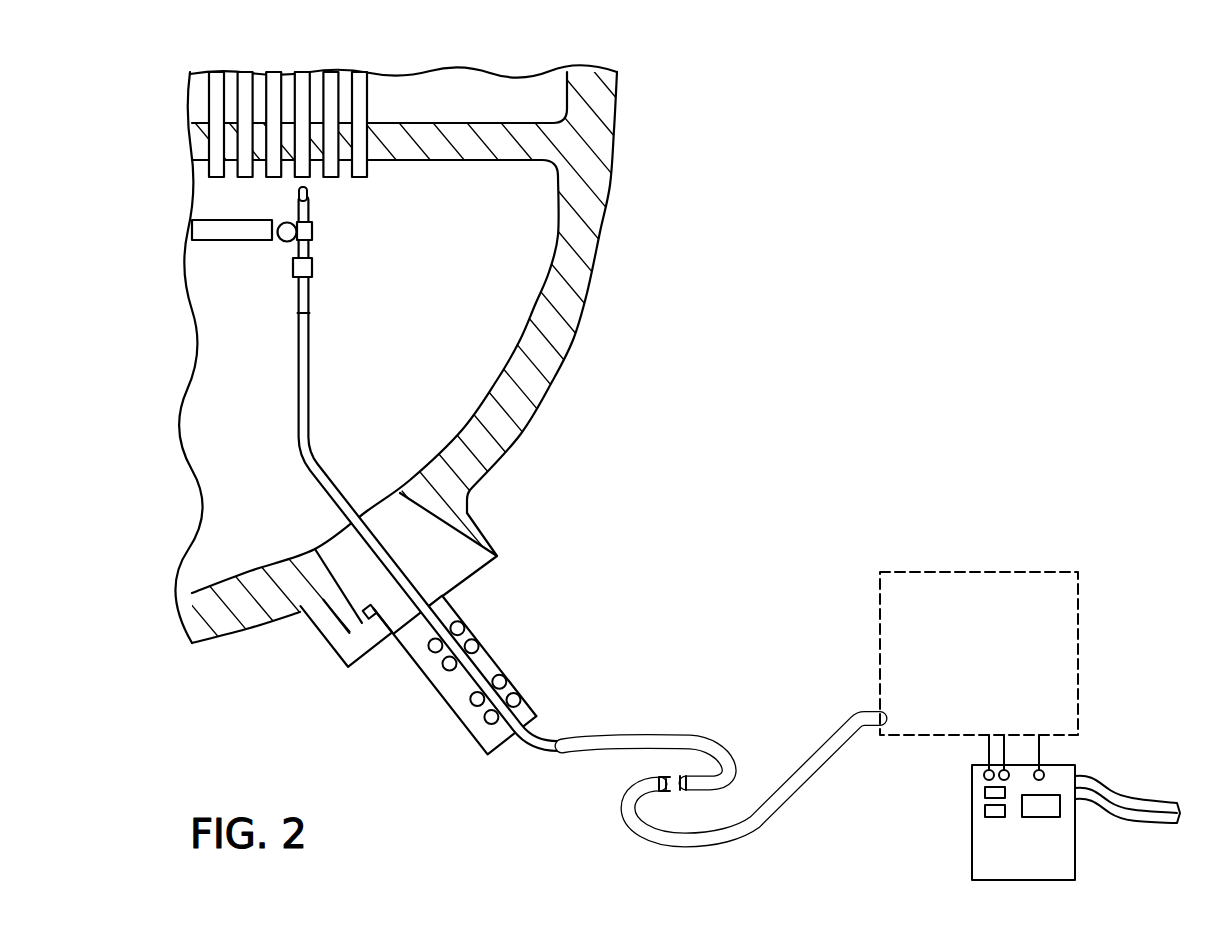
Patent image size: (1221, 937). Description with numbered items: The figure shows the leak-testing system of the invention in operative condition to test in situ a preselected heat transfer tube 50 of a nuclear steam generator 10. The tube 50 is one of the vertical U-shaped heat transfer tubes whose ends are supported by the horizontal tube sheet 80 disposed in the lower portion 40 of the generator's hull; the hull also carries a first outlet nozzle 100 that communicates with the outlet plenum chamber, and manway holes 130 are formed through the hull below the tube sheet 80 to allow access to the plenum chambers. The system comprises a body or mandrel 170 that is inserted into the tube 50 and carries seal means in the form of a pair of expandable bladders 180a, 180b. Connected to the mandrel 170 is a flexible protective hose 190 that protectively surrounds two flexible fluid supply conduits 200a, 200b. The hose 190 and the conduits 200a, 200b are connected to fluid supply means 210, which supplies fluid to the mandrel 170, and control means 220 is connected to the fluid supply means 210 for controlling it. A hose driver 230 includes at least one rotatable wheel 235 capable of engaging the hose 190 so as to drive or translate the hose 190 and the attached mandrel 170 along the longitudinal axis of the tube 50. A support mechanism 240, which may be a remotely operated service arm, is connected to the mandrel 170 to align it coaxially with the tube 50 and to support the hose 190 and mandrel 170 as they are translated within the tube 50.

The nuclear steam generator 10 is at (808, 248).
The lower portion 40 is at (614, 82).
The heat transfer tubes 50 is at (300, 78).
The tube sheet 80 is at (524, 143).
The first outlet nozzle 100 is at (548, 315).
The manway holes 130 is at (452, 571).
The mandrel 170 is at (268, 309).
The expandable bladder 180a is at (312, 231).
The expandable bladder 180b is at (312, 270).
The flexible protective hose 190 is at (697, 738).
The flexible fluid supply conduit 200a is at (666, 777).
The flexible fluid supply conduit 200b is at (668, 792).
The fluid supply means 210 is at (1005, 546).
The control means 220 is at (1114, 734).
The hose driver 230 is at (557, 660).
The rotatable wheel 235 is at (517, 688).
The support mechanism 240 is at (212, 236).